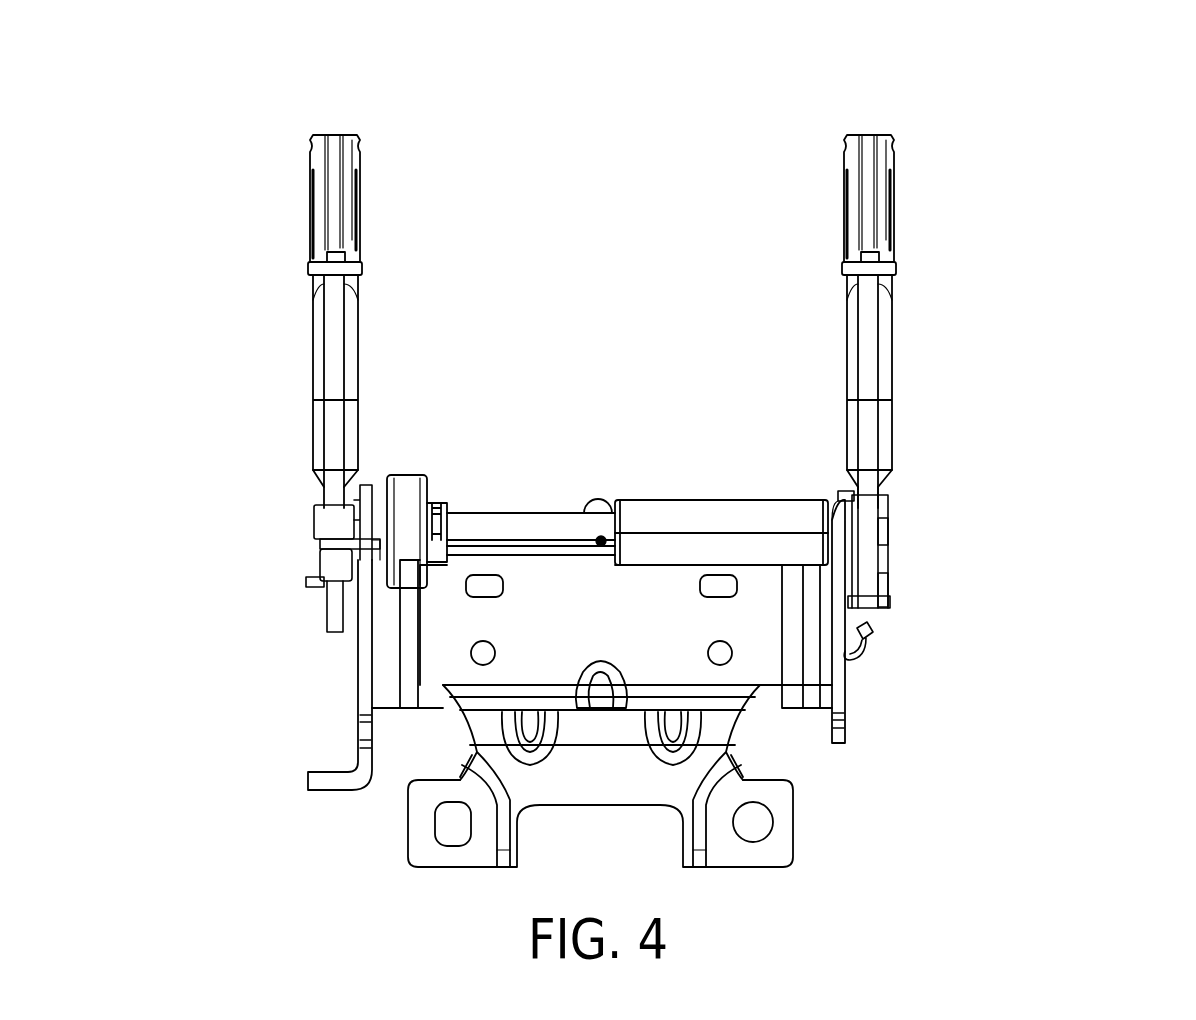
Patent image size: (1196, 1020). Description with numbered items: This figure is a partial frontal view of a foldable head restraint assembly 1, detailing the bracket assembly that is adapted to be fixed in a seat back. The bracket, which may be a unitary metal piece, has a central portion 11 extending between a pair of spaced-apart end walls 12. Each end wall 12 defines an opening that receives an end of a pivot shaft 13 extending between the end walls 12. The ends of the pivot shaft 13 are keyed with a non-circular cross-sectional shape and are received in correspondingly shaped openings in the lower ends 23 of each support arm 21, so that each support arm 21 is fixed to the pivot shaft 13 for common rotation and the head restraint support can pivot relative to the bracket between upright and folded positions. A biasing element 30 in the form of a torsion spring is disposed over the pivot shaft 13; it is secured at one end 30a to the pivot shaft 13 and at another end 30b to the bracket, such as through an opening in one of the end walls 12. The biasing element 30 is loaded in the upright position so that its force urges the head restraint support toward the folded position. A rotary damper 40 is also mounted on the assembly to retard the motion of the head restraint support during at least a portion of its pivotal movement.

The foldable head restraint assembly 1 is at (1066, 395).
The central portion 11 is at (452, 655).
The end walls 12 is at (357, 698).
The pivot shaft 13 is at (506, 516).
The support arm 21 is at (313, 342).
The lower ends 23 is at (333, 562).
The biasing element 30 is at (684, 500).
The one end 30a is at (598, 500).
The another end 30b is at (868, 640).
The rotary damper 40 is at (408, 471).